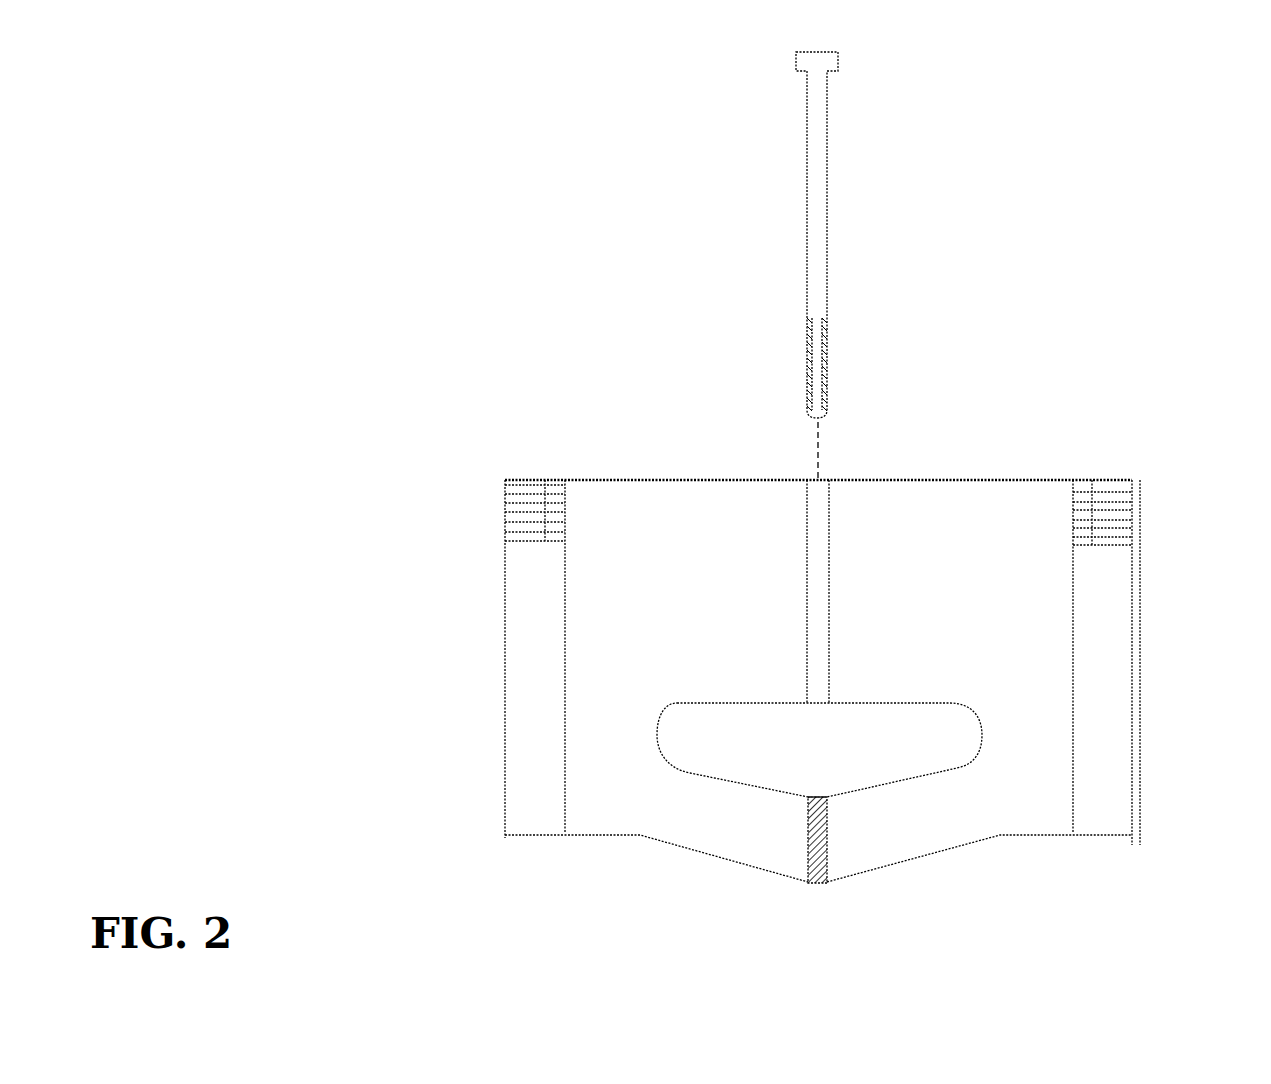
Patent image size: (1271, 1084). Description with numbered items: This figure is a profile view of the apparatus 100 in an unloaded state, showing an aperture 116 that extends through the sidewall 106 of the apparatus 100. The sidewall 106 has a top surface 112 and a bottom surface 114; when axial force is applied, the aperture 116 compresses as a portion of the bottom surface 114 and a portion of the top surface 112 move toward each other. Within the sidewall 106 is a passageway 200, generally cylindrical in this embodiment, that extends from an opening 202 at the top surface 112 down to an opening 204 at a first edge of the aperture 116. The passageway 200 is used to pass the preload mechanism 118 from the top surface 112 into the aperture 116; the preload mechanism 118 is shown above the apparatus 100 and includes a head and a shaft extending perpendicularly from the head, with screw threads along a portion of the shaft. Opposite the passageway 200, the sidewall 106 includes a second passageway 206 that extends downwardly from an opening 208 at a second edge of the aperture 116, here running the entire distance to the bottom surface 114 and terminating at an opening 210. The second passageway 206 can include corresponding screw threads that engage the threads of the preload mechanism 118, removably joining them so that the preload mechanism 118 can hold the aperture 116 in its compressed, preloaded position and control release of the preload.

The apparatus 100 is at (1162, 330).
The sidewall 106 is at (927, 888).
The top surface 112 is at (1025, 478).
The bottom surface 114 is at (618, 838).
The aperture 116 is at (746, 768).
The preload mechanism 118 is at (835, 264).
The passageway 200 is at (840, 598).
The opening 202 is at (806, 477).
The opening 204 is at (821, 708).
The second passageway 206 is at (833, 860).
The opening 208 is at (815, 792).
The opening 210 is at (816, 890).